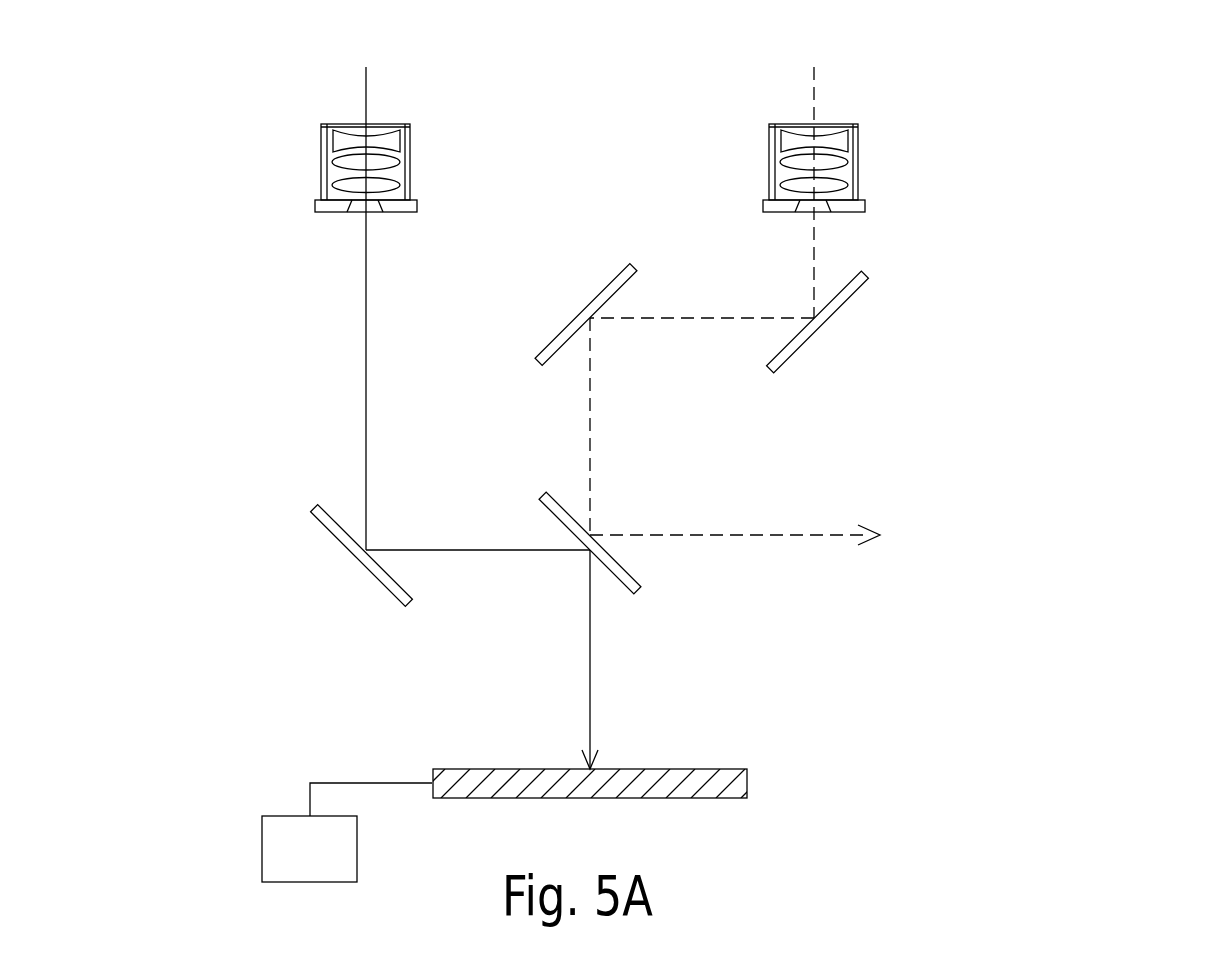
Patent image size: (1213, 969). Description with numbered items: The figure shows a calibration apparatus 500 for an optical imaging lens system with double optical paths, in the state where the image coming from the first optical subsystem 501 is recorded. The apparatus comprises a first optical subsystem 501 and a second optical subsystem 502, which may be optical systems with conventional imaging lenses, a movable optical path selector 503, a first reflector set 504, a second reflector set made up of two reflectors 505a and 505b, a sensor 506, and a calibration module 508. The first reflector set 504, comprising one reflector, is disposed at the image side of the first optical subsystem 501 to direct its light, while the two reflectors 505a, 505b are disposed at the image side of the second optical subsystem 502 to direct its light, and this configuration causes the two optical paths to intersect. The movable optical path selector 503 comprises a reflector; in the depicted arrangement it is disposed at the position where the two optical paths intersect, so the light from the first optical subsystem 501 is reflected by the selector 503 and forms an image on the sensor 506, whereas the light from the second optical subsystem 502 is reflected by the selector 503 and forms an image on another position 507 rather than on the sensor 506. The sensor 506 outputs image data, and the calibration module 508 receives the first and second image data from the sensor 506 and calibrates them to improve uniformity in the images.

The calibration apparatus 500 is at (1062, 143).
The first optical subsystem 501 is at (411, 160).
The second optical subsystem 502 is at (859, 160).
The movable optical path selector 503 is at (640, 593).
The first reflector set 504 is at (358, 560).
The reflector 505a is at (868, 277).
The reflector 505b is at (637, 268).
The sensor 506 is at (748, 782).
The another position 507 is at (880, 535).
The calibration module 508 is at (347, 832).